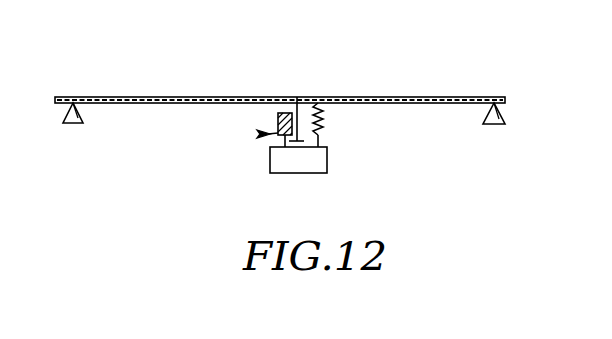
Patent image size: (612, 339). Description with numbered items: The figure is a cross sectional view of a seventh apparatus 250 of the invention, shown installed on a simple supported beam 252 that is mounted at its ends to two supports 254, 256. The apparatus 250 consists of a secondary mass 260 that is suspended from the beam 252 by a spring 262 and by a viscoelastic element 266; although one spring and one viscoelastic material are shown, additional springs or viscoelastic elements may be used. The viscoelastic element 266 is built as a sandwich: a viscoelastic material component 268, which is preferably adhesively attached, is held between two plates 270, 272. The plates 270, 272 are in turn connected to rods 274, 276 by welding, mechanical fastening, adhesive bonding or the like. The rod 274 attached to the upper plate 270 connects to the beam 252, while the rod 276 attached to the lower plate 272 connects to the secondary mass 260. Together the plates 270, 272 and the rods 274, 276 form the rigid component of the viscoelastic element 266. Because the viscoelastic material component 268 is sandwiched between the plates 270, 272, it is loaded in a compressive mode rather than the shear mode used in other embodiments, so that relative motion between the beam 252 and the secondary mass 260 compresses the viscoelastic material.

The apparatus 250 is at (384, 181).
The beam 252 is at (203, 97).
The support 254 is at (63, 119).
The support 256 is at (497, 125).
The secondary mass 260 is at (302, 173).
The spring 262 is at (318, 135).
The viscoelastic element 266 is at (262, 134).
The viscoelastic material component 268 is at (278, 118).
The plate 270 is at (297, 97).
The plate 272 is at (262, 137).
The rod 274 is at (278, 113).
The rod 276 is at (309, 97).